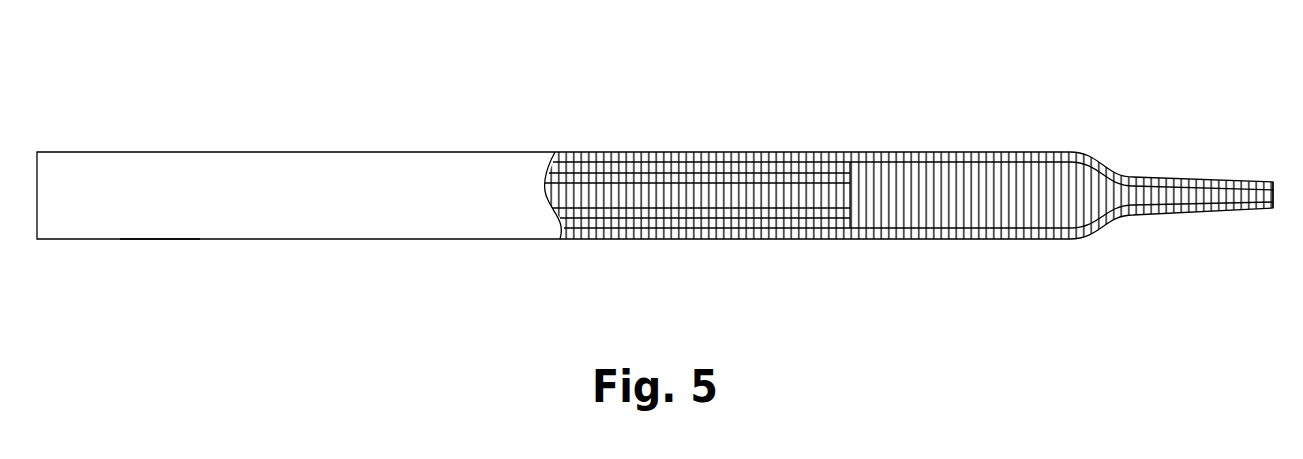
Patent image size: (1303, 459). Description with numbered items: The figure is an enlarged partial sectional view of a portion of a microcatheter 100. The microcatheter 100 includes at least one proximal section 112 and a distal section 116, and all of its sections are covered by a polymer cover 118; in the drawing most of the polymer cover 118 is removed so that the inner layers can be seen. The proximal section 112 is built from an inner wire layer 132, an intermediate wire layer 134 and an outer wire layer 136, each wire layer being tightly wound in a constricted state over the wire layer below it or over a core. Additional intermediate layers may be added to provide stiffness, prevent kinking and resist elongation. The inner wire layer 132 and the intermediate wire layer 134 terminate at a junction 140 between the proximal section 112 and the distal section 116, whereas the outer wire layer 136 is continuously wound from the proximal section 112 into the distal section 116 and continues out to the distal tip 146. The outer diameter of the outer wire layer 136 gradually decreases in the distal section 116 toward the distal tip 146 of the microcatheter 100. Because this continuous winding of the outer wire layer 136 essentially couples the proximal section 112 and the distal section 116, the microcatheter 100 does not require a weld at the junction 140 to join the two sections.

The microcatheter 100 is at (136, 78).
The proximal section 112 is at (250, 280).
The distal section 116 is at (915, 110).
The polymer cover 118 is at (158, 221).
The inner wire layer 132 is at (643, 212).
The intermediate wire layer 134 is at (696, 222).
The outer wire layer 136 is at (745, 232).
The junction 140 is at (855, 195).
The distal tip 146 is at (1275, 207).